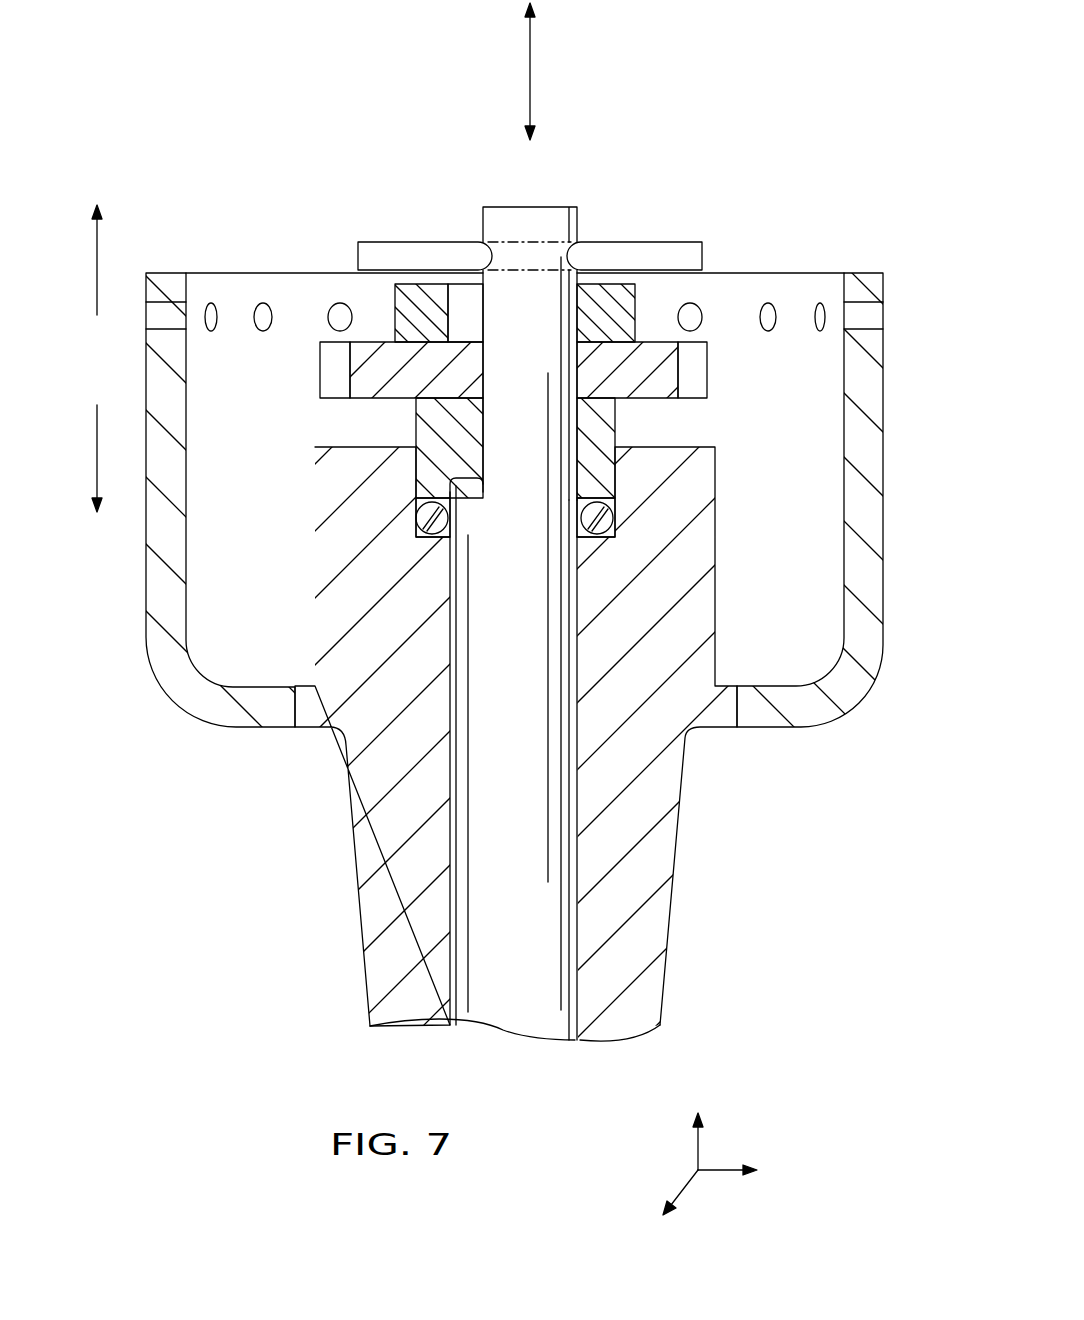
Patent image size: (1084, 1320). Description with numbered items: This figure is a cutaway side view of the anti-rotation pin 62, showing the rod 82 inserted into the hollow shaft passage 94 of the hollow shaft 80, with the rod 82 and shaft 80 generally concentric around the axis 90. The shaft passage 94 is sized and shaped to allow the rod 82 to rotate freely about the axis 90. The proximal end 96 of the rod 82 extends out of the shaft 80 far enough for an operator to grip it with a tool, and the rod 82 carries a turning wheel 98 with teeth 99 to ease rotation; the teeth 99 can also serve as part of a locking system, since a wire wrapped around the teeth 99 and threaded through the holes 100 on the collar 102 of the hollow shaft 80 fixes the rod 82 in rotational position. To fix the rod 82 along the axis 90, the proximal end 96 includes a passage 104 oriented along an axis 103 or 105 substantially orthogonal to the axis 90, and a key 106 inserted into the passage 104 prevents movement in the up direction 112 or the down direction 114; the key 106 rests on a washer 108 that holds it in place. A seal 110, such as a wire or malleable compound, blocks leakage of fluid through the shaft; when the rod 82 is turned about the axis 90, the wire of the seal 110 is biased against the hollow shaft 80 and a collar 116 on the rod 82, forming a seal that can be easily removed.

The anti-rotation pin 62 is at (359, 176).
The hollow shaft 80 is at (685, 745).
The rod 82 is at (557, 808).
The axis 90 is at (730, 1122).
The hollow shaft passage 94 is at (580, 947).
The proximal end 96 is at (578, 226).
The turning wheel 98 is at (688, 401).
The teeth 99 is at (697, 365).
The holes 100 is at (885, 315).
The collar 102 is at (885, 381).
The axis 103 is at (718, 1172).
The passage 104 is at (548, 240).
The axis 105 is at (683, 1185).
The key 106 is at (352, 255).
The washer 108 is at (637, 302).
The seal 110 is at (613, 519).
The up direction 112 is at (97, 293).
The down direction 114 is at (97, 433).
The collar 116 is at (413, 498).